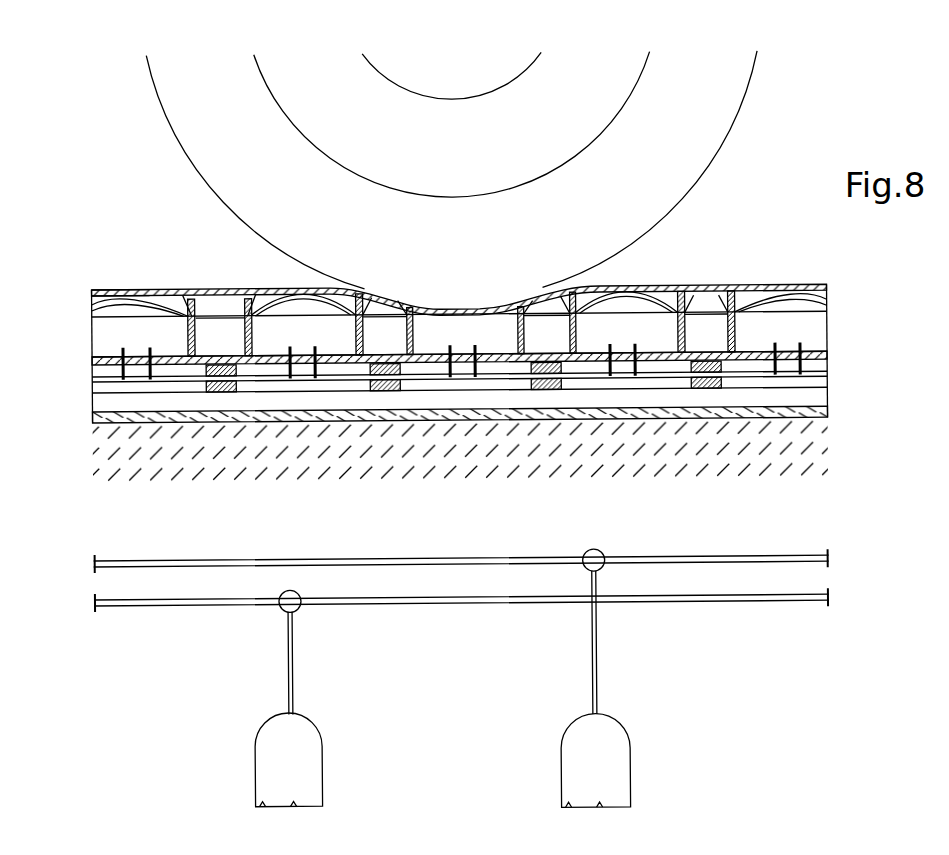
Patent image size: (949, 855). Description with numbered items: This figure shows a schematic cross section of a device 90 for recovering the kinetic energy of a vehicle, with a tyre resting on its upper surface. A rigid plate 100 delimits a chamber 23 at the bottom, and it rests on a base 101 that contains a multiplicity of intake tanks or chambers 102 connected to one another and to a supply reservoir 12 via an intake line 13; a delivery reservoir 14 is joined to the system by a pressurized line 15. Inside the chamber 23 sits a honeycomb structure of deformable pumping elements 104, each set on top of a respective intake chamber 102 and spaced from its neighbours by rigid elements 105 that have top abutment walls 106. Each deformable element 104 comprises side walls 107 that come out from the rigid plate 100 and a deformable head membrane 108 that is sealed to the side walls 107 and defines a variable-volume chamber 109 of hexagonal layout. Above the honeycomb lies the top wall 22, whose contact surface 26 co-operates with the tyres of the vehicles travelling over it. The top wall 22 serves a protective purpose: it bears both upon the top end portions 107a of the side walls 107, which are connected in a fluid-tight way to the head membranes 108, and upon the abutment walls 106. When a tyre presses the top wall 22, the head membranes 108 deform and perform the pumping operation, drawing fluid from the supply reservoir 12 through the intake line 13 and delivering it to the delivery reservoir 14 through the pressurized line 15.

The device 90 is at (643, 281).
The deformable pumping element 104 is at (267, 291).
The contact surface 26 is at (125, 290).
The top wall 22 is at (133, 290).
The head membrane 108 is at (92, 297).
The variable-volume chamber 109 is at (115, 329).
The top abutment wall 106 is at (192, 300).
The rigid element 105 is at (217, 340).
The top end portion 107a is at (183, 290).
The side wall 107 is at (368, 324).
The chamber 23 is at (680, 300).
The rigid plate 100 is at (92, 361).
The base 101 is at (830, 393).
The intake tank 102 is at (362, 380).
The pressurized line 15 is at (522, 562).
The intake line 13 is at (445, 607).
The supply reservoir 12 is at (306, 756).
The delivery reservoir 14 is at (572, 753).